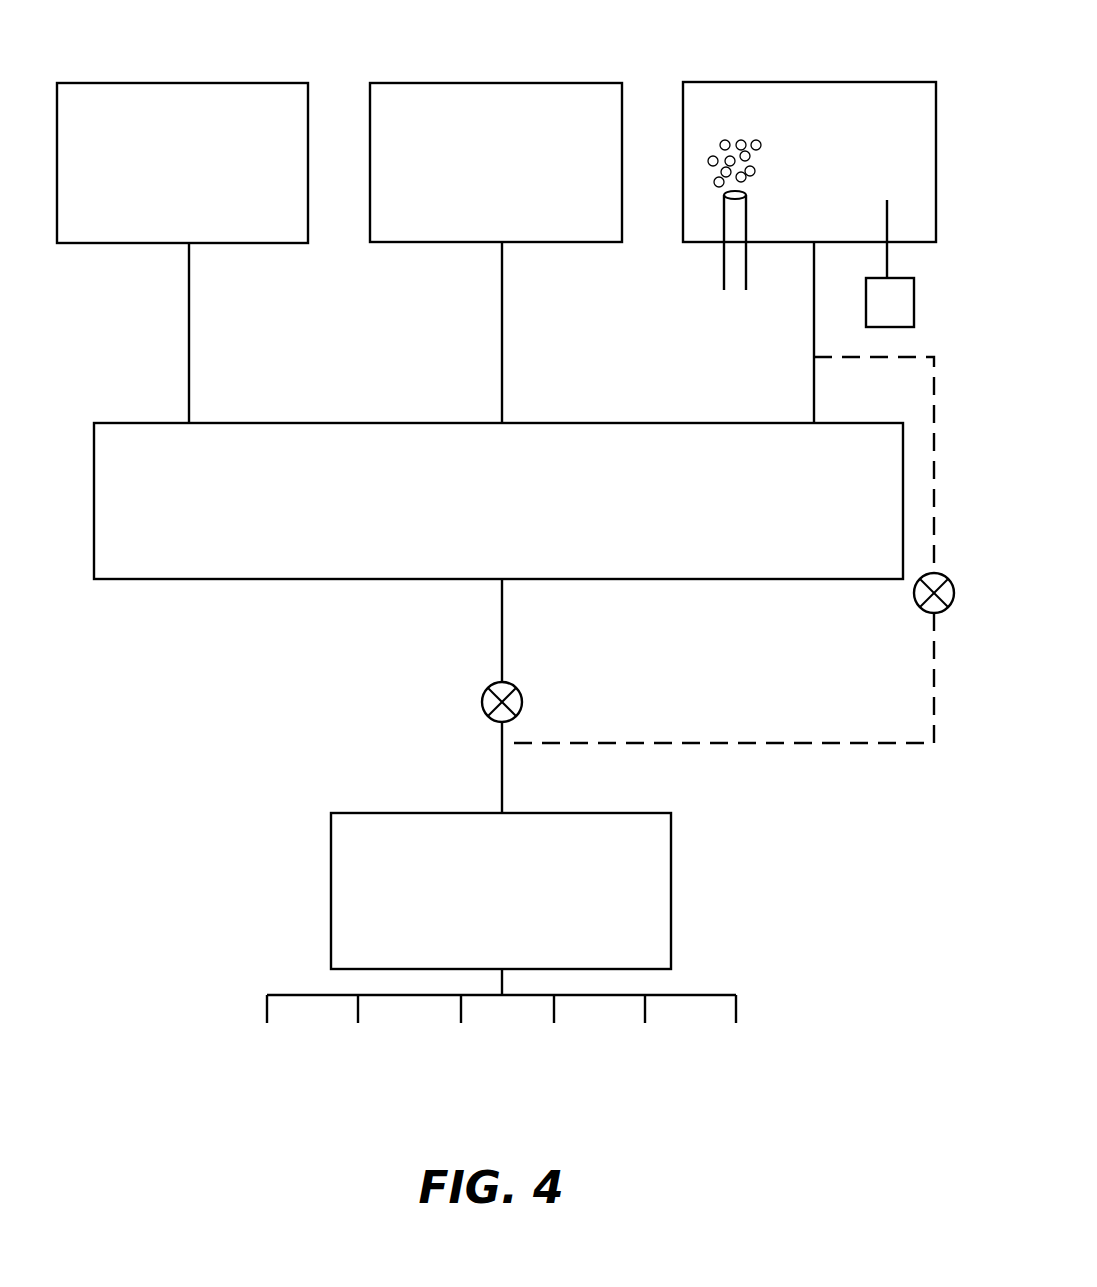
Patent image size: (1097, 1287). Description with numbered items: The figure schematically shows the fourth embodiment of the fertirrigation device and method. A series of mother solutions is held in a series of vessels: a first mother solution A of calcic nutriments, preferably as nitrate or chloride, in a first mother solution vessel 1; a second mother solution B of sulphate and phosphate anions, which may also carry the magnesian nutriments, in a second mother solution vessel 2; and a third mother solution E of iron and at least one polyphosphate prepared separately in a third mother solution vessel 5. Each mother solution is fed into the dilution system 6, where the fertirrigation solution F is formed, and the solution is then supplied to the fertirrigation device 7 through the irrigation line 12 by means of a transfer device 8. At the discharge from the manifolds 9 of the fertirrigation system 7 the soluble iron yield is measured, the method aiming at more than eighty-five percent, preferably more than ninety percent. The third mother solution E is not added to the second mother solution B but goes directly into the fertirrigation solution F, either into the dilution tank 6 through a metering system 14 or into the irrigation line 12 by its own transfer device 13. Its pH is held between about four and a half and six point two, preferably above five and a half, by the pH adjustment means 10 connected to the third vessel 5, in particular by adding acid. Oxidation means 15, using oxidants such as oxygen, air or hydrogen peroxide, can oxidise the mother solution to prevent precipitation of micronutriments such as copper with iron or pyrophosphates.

The first mother solution vessel 1 is at (240, 83).
The second mother solution vessel 2 is at (517, 83).
The third mother solution vessel 5 is at (873, 82).
The dilution system 6 is at (875, 421).
The fertirrigation device 7 is at (671, 889).
The transfer device 8 is at (481, 700).
The manifolds 9 is at (736, 995).
The pH adjustment means 10 is at (914, 303).
The irrigation line 12 is at (502, 790).
The transfer device 13 is at (913, 594).
The metering system 14 is at (189, 346).
The oxidation means 15 is at (735, 294).